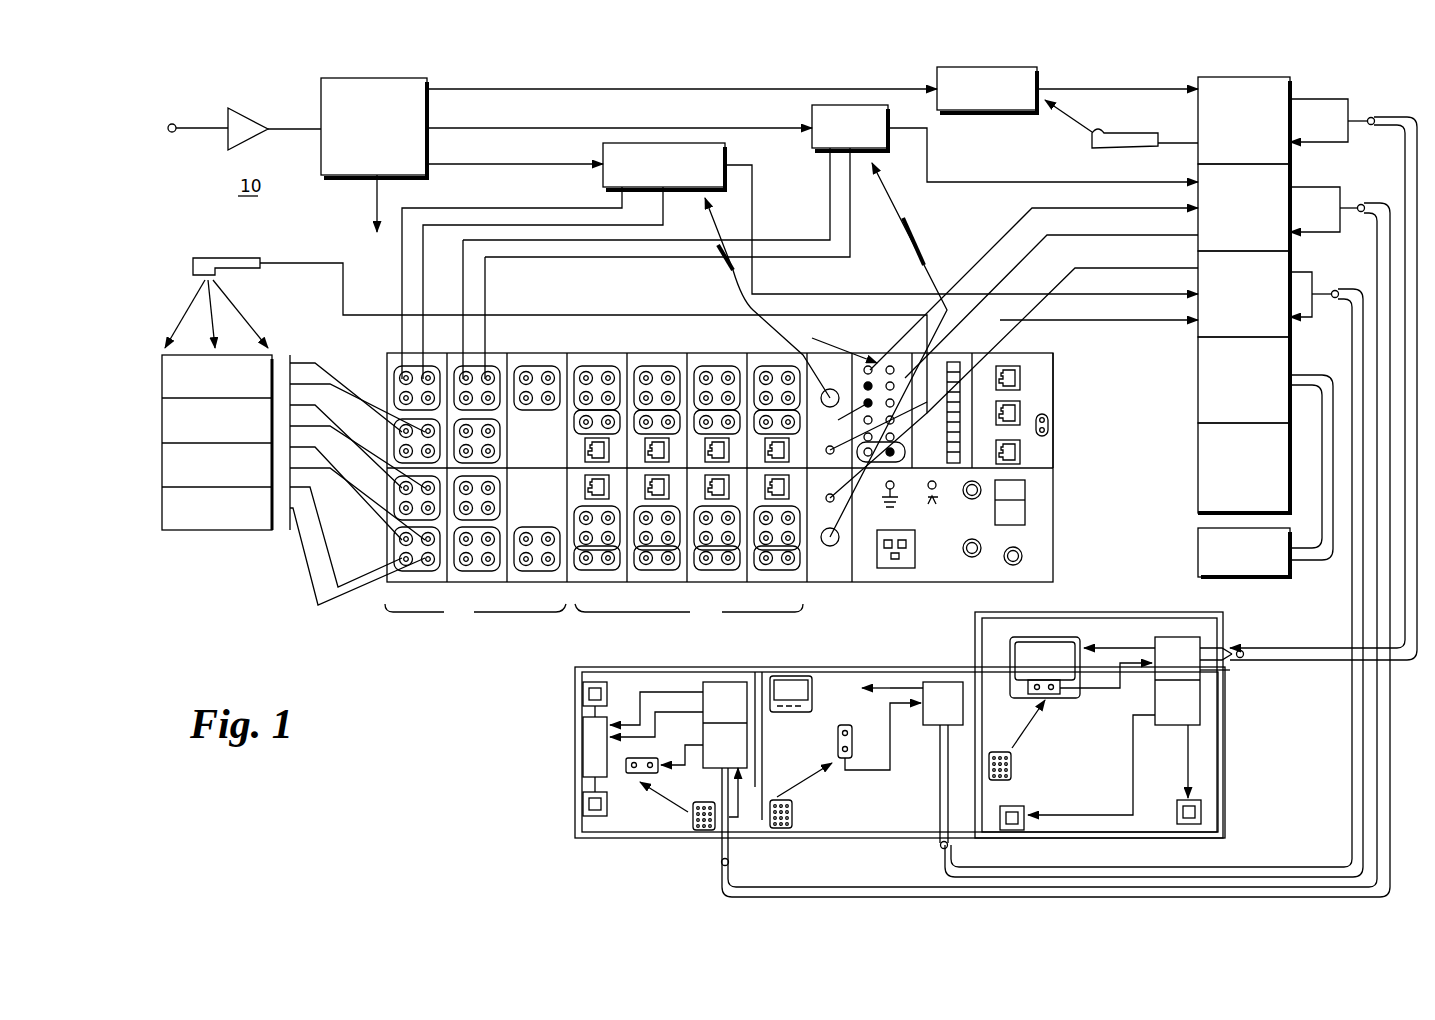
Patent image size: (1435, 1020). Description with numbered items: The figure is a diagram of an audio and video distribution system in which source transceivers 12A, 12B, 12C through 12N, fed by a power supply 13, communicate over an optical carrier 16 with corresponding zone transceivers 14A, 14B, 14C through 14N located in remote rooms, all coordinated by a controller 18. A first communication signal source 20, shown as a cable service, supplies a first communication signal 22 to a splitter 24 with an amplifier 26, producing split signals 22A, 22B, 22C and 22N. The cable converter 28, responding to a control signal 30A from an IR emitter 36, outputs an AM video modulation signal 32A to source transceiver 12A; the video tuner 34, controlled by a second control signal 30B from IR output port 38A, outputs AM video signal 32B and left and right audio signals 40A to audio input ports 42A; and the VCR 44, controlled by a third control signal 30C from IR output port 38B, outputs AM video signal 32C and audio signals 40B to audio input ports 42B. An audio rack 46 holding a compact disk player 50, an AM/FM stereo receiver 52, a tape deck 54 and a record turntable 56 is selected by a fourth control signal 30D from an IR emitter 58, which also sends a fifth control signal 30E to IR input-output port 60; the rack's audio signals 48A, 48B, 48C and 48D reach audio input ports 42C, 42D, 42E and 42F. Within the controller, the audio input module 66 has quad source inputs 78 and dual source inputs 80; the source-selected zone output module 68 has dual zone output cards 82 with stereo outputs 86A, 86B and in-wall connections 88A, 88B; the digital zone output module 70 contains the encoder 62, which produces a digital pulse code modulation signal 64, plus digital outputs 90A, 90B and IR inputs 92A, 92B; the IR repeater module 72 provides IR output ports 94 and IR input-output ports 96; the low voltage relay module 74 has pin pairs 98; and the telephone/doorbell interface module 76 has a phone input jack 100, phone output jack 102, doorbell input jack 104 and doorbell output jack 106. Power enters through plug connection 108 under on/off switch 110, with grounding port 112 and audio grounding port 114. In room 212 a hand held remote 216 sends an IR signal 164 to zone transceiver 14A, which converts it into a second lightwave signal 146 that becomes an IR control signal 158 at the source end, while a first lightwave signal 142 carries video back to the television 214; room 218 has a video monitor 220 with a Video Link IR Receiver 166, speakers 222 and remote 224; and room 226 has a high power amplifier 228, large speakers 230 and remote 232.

The source transceiver 12A is at (1214, 114).
The source transceiver 12B is at (1295, 184).
The source transceiver 12C is at (1284, 272).
The source transceiver 12N is at (1222, 380).
The power supply 13 is at (1206, 471).
The zone transceiver 14A is at (940, 690).
The zone transceiver 14B is at (1165, 668).
The zone transceiver 14C is at (722, 690).
The zone transceiver 14N is at (1208, 554).
The optical carrier 16 is at (1410, 148).
The controller 18 is at (1046, 560).
The first communication signal source 20 is at (170, 124).
The first communication signal 22 is at (202, 129).
The split first communication signal 22A is at (485, 80).
The split first communication signal 22B is at (485, 120).
The split first communication signal 22C is at (485, 156).
The split first communication signal 22N is at (377, 209).
The splitter 24 is at (371, 78).
The amplifier 26 is at (250, 112).
The cable converter 28 is at (987, 114).
The control signal 30A is at (1079, 114).
The second control signal 30B is at (904, 208).
The third control signal 30C is at (730, 278).
The fourth control signal 30D is at (241, 311).
The fifth control signal 30E is at (294, 264).
The AM video modulation signal 32A is at (1096, 86).
The AM video modulation signal 32B is at (1023, 176).
The AM video modulation signal 32C is at (752, 188).
The video tuner 34 is at (888, 155).
The IR emitter 36 is at (1136, 152).
The IR output port 38A is at (831, 340).
The IR output port 38B is at (840, 420).
The left and right audio signals 40A is at (840, 228).
The left and right audio signals 40B is at (404, 300).
The audio input ports 42A is at (488, 370).
The audio input ports 42B is at (402, 370).
The audio input ports 42C is at (488, 432).
The audio input ports 42D is at (396, 550).
The audio input ports 42E is at (436, 571).
The audio input ports 42F is at (473, 571).
The video cassette recorder 44 is at (600, 178).
The second communication signal source 46 is at (210, 548).
The left and right audio signals 48A is at (330, 350).
The left and right audio signals 48B is at (346, 419).
The left and right audio signals 48C is at (346, 490).
The left and right audio signals 48D is at (306, 542).
The compact disk player 50 is at (170, 392).
The AM/FM stereo receiver 52 is at (170, 433).
The tape deck 54 is at (174, 478).
The record turntable 56 is at (242, 527).
The IR emitter 58 is at (213, 262).
The IR input-output port 60 is at (892, 456).
The pulse code modulator encoder 62 is at (866, 542).
The digital pulse code modulation signal 64 is at (1100, 204).
The audio input module 66 is at (475, 618).
The source-selected zone output module 68 is at (689, 618).
The digital zone output module 70 is at (856, 584).
The IR repeater module 72 is at (878, 360).
The low voltage relay module 74 is at (946, 362).
The telephone/doorbell interface module 76 is at (1024, 362).
The quad source input 78 is at (488, 488).
The dual source input 80 is at (540, 368).
The dual zone output card 82 is at (618, 360).
The stereo output 86A is at (598, 382).
The stereo output 86B is at (592, 572).
The in-wall connection 88A is at (580, 449).
The in-wall connection 88B is at (580, 485).
The digital output 90A is at (822, 392).
The digital output 90B is at (831, 547).
The IR input 92A is at (868, 439).
The IR input 92B is at (826, 509).
The IR output ports 94 is at (892, 404).
The IR input-output ports 96 is at (880, 478).
The pin pairs 98 is at (960, 455).
The phone input jack 100 is at (1022, 380).
The phone output jack 102 is at (1022, 412).
The doorbell input jack 104 is at (1050, 426).
The doorbell output jack 106 is at (1022, 452).
The plug connection 108 is at (905, 570).
The on/off switch 110 is at (1014, 518).
The grounding port 112 is at (942, 496).
The audio grounding port 114 is at (893, 498).
The first lightwave signal 142 is at (732, 848).
The second lightwave signal 146 is at (628, 782).
The IR control signal 158 is at (1136, 234).
The IR signal 164 is at (660, 753).
The Video Link IR Receiver 166 is at (853, 745).
The room 212 is at (875, 815).
The television 214 is at (787, 710).
The hand held remote 216 is at (794, 816).
The room 218 is at (1147, 628).
The video monitor 220 is at (1040, 642).
The speakers 222 is at (1203, 812).
The hand held remote 224 is at (1012, 768).
The room 226 is at (618, 828).
The high power amplifier 228 is at (583, 740).
The speakers 230 is at (583, 804).
The hand held remote 232 is at (698, 832).